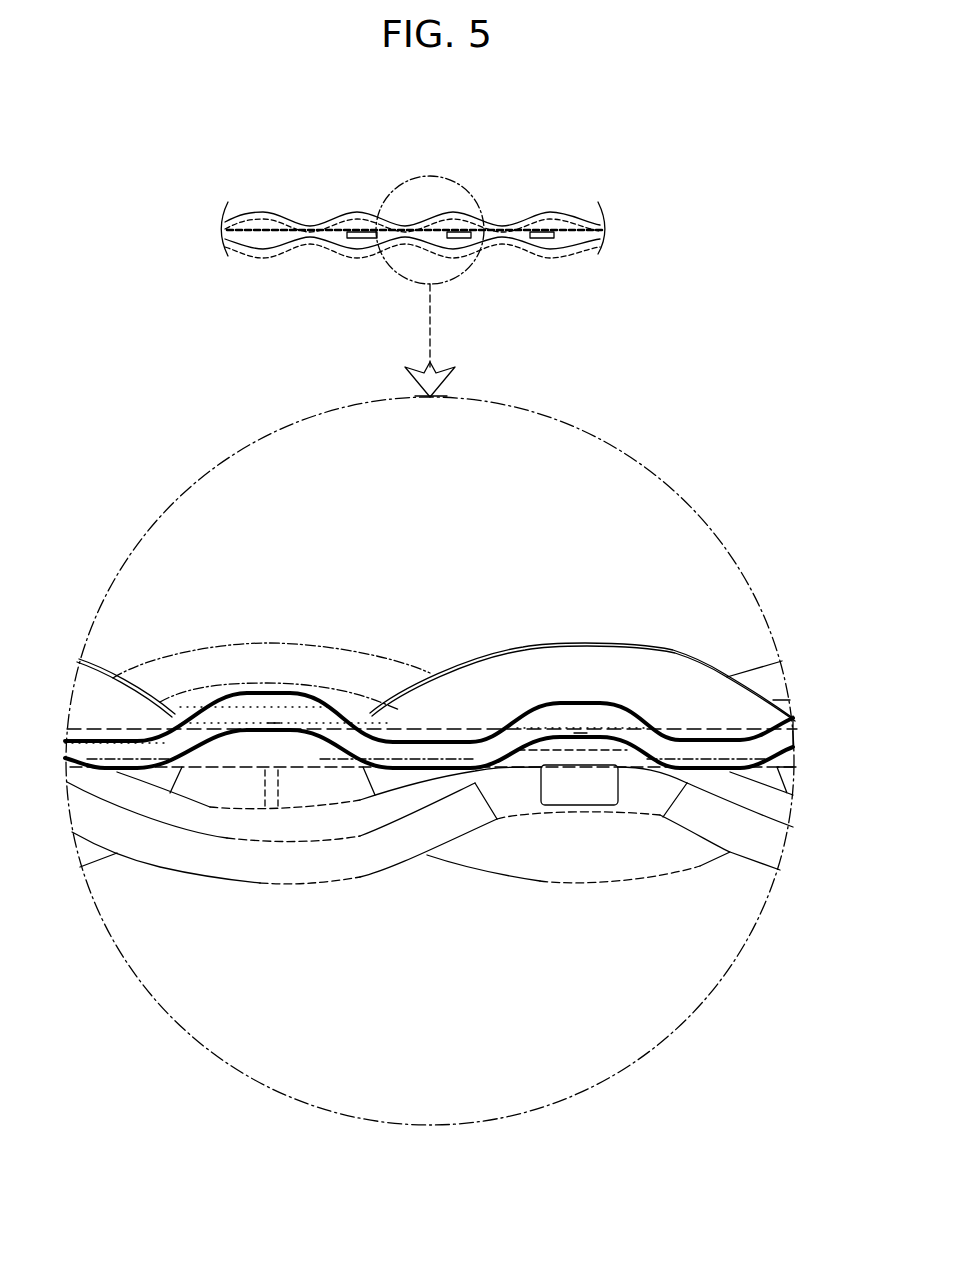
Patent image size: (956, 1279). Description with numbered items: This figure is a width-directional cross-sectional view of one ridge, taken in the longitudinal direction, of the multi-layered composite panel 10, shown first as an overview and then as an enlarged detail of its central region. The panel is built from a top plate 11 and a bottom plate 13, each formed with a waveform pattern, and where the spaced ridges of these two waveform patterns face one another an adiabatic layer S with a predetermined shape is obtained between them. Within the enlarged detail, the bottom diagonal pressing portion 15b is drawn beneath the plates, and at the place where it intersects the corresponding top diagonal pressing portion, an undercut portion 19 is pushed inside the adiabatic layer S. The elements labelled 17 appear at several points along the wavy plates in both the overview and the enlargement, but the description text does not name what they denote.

The multi-layered composite panel 10 is at (557, 157).
The top plate 11 is at (492, 212).
The bottom plate 13 is at (554, 260).
The bottom diagonal pressing portion 15b is at (540, 240).
The yarns 17 is at (352, 210).
The undercut portion 19 is at (287, 790).
The adiabatic layer S is at (426, 714).